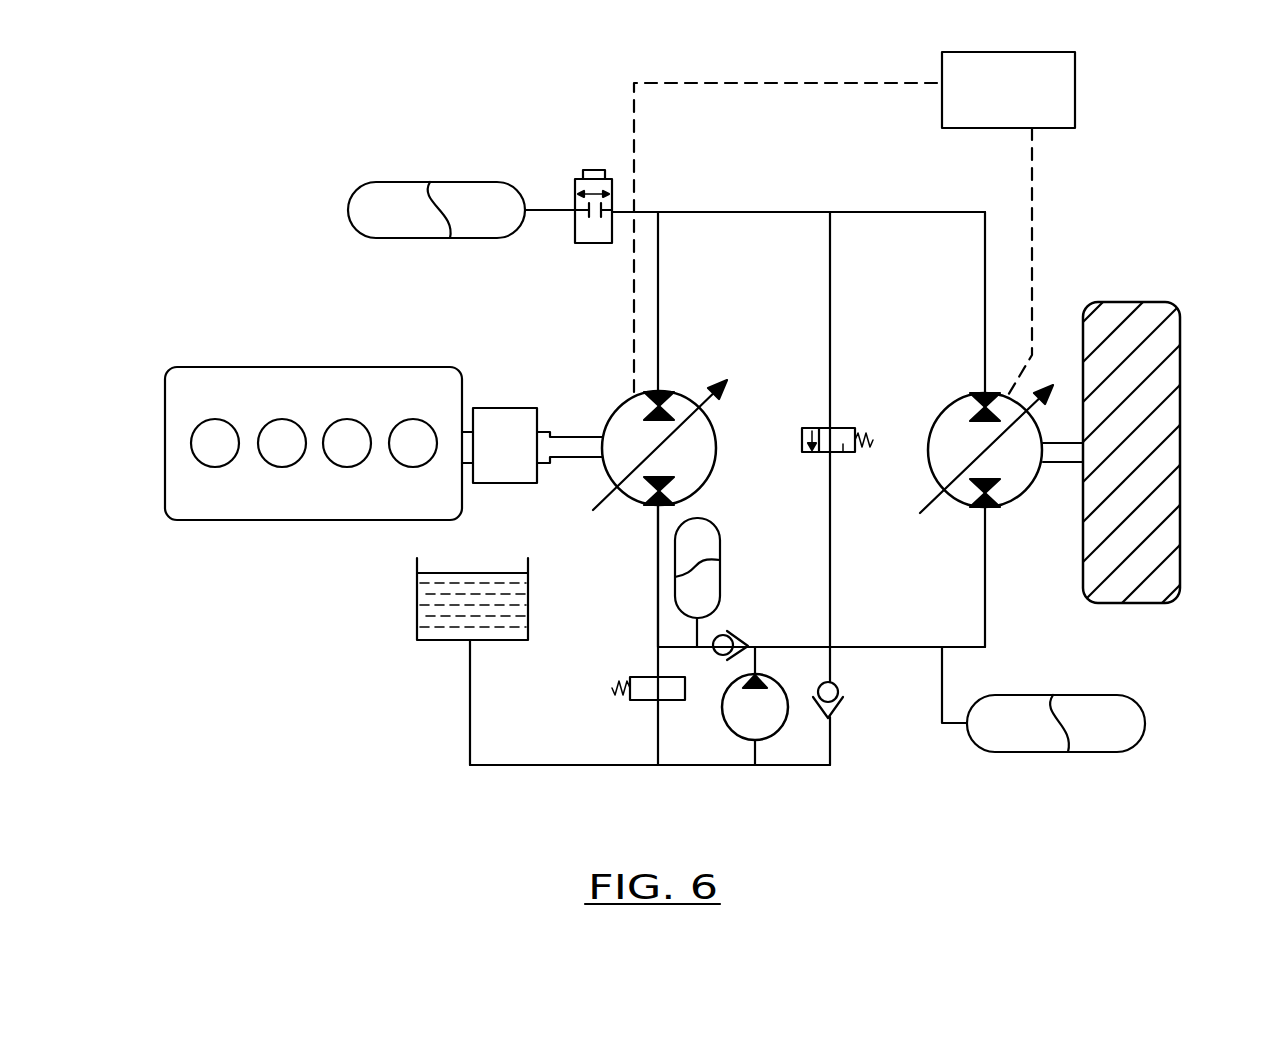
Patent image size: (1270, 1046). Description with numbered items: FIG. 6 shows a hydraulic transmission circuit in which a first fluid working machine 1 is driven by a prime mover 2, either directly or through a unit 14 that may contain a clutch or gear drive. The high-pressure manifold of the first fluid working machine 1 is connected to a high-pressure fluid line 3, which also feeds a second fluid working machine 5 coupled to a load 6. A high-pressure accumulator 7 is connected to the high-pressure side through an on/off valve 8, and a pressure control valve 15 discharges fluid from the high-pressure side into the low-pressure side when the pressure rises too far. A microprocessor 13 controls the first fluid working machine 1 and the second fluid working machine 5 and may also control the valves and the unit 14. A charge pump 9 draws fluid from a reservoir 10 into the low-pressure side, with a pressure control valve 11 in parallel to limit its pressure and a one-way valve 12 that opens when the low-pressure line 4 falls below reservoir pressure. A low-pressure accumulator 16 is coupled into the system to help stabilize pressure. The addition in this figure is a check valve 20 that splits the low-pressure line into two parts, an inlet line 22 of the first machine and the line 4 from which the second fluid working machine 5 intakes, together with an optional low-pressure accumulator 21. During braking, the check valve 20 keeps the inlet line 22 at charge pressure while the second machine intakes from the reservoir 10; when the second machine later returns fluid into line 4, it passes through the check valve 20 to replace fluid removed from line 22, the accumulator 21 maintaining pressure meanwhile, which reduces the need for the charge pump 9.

The first fluid working machine 1 is at (718, 428).
The prime mover 2 is at (245, 402).
The high-pressure fluid line 3 is at (783, 212).
The low-pressure fluid line 4 is at (775, 647).
The second fluid working machine 5 is at (960, 415).
The load 6 is at (1172, 347).
The high-pressure accumulator 7 is at (398, 185).
The on/off valve 8 is at (595, 170).
The charge pump 9 is at (757, 725).
The reservoir 10 is at (417, 605).
The pressure control valve 11 is at (645, 700).
The one-way valve 12 is at (840, 705).
The microprocessor 13 is at (1065, 85).
The clutch and gear unit 14 is at (500, 415).
The pressure control valve 15 is at (840, 452).
The low-pressure accumulator 16 is at (1145, 727).
The check valve 20 is at (720, 656).
The low-pressure accumulator 21 is at (713, 518).
The inlet line 22 is at (655, 598).